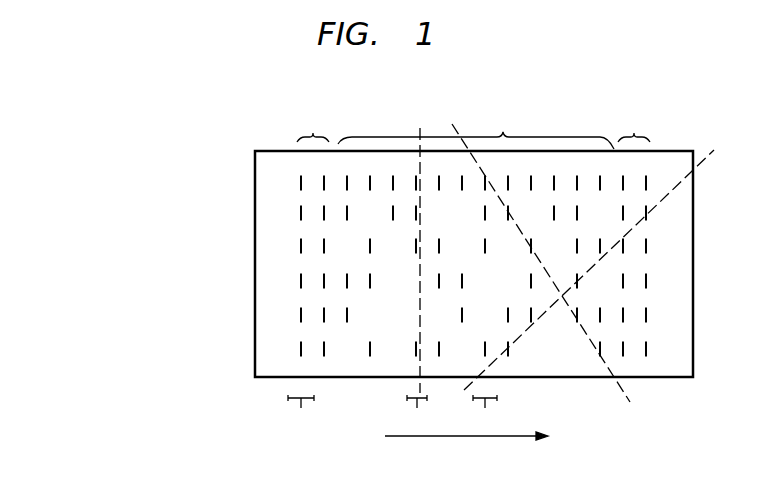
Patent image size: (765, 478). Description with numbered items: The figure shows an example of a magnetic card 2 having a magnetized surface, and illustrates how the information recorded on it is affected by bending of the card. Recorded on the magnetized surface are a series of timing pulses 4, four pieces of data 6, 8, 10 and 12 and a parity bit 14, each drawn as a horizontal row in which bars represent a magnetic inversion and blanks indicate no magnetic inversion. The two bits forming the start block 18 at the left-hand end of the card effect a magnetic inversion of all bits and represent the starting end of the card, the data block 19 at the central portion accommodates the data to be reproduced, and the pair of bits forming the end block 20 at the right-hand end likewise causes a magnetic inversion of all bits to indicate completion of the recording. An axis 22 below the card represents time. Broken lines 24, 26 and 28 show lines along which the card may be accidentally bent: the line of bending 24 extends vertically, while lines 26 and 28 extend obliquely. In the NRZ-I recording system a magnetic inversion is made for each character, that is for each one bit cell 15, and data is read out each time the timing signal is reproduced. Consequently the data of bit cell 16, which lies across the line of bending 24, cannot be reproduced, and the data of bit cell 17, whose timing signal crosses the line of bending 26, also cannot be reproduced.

The magnetic card 2 is at (263, 150).
The timing pulses 4 is at (294, 183).
The data D1 6 is at (294, 213).
The data D2 8 is at (294, 246).
The data D3 10 is at (294, 281).
The data D4 12 is at (294, 315).
The parity bit 14 is at (294, 349).
The bit cell 15 is at (301, 413).
The bit cell 16 is at (417, 413).
The bit cell 17 is at (485, 413).
The start block 18 is at (313, 126).
The data block 19 is at (476, 128).
The end block 20 is at (634, 126).
The time axis 22 is at (393, 437).
The line of bending 24 is at (420, 128).
The line of bending 26 is at (456, 126).
The line of bending 28 is at (711, 156).